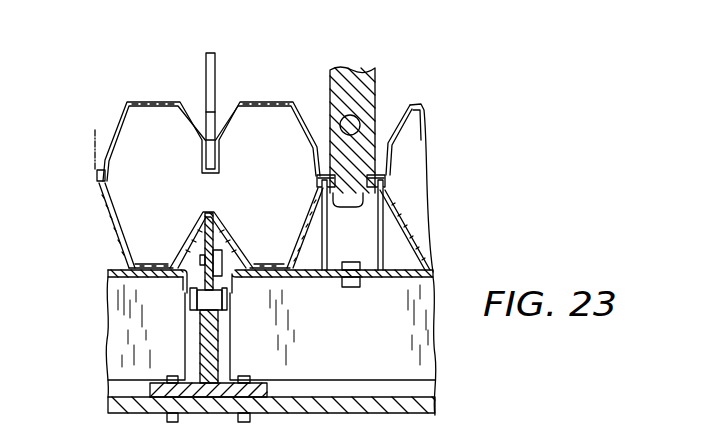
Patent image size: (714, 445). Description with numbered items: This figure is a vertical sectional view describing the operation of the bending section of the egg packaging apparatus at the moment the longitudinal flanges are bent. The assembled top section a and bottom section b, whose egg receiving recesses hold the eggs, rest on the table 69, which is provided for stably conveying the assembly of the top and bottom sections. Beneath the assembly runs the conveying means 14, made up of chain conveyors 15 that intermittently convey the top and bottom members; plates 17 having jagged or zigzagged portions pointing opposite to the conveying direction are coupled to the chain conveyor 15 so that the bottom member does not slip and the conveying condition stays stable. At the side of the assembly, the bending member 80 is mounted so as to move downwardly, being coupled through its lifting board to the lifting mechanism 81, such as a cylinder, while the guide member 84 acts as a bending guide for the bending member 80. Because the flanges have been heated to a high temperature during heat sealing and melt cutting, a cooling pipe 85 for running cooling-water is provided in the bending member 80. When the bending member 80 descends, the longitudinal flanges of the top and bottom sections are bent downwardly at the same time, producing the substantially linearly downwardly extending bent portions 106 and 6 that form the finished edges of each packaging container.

The top section a is at (160, 102).
The bottom section b is at (104, 226).
The plate 17 is at (203, 236).
The conveying means 14 is at (226, 319).
The chain conveyor 15 is at (190, 305).
The table 69 is at (125, 276).
The guide member 84 is at (322, 252).
The bending member 80 is at (360, 88).
The cooling pipe 85 is at (360, 130).
The bent portion 106 is at (350, 200).
The bent portion 6 is at (330, 190).
The lifting mechanism 81 is at (390, 242).